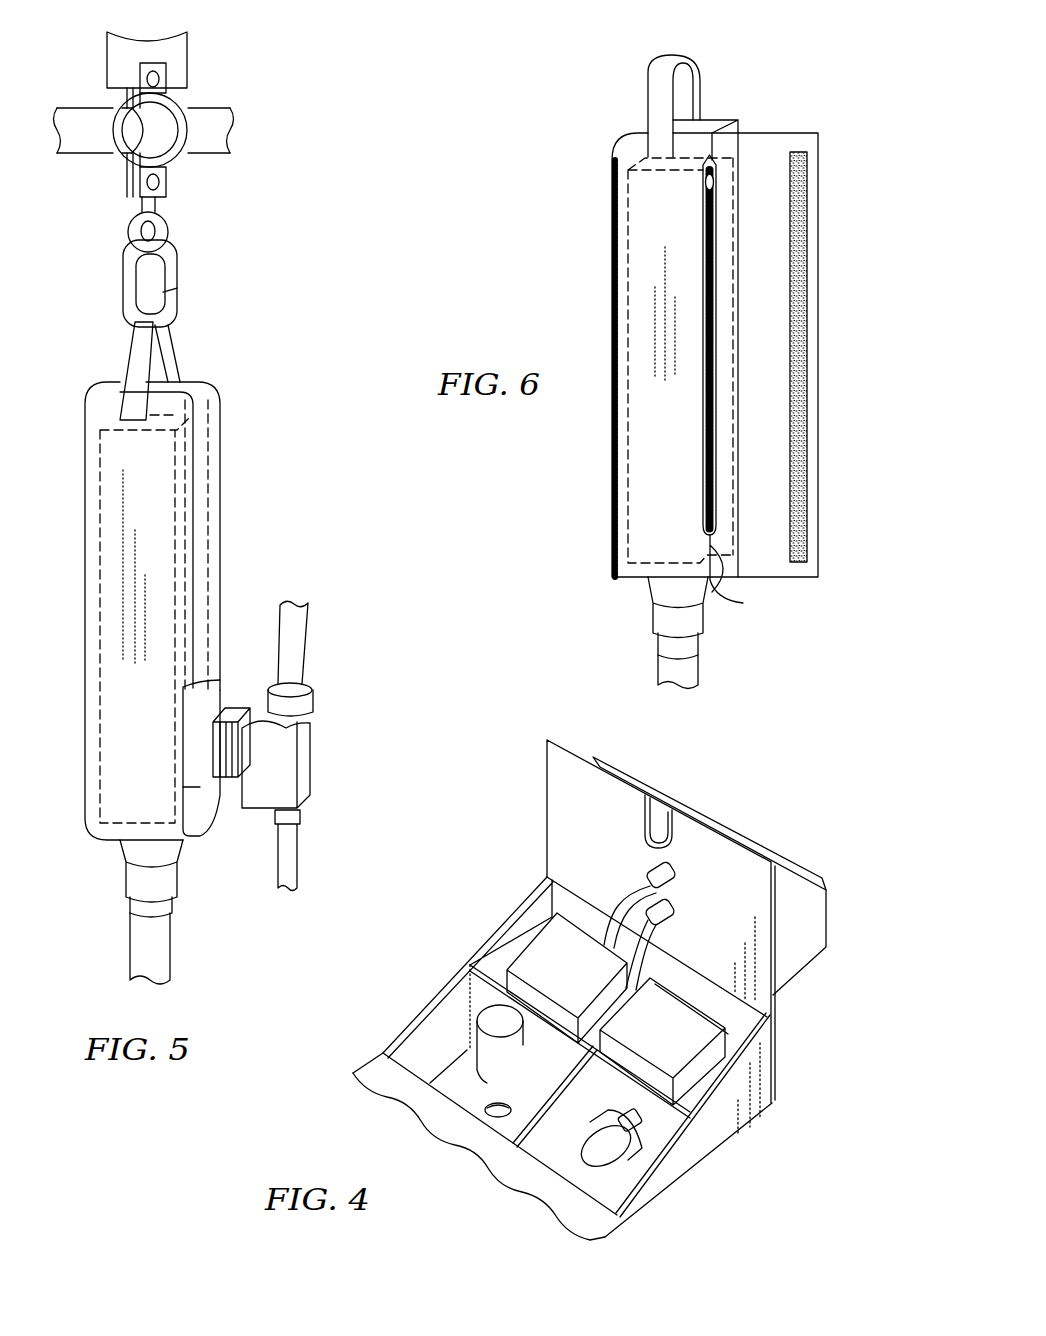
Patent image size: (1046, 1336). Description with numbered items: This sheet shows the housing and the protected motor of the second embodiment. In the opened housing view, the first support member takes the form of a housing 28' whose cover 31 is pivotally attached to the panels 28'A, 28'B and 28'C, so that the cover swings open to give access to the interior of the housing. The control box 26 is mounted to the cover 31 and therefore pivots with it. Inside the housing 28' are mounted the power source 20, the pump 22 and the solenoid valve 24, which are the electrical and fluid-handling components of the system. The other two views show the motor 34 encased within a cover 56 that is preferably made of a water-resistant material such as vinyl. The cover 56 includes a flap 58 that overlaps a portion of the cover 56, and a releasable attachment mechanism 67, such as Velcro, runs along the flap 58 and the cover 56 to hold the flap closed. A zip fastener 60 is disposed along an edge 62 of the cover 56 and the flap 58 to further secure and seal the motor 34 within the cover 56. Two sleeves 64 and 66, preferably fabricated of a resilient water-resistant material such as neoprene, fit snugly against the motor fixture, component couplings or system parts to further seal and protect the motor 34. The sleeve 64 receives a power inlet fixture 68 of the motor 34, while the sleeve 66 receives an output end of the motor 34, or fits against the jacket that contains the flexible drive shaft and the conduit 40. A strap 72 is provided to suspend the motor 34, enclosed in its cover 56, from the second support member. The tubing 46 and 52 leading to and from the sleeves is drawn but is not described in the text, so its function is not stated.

In FIG. 4, the power source 20 is at (587, 976).
In FIG. 4, the pump 22 is at (492, 1012).
In FIG. 4, the solenoid valve 24 is at (610, 1130).
In FIG. 4, the control box 26 is at (792, 958).
In FIG. 4, the housing 28' is at (703, 959).
In FIG. 4, the panel 28'A is at (701, 1125).
In FIG. 4, the panel 28'B is at (468, 967).
In FIG. 4, the panel 28'C is at (521, 1043).
In FIG. 4, the cover 31 is at (735, 909).
In FIG. 5, the motor 34 is at (102, 507).
In FIG. 6, the motor 34 is at (627, 222).
In FIG. 5, the conduit 40 is at (300, 843).
In FIG. 5, the tube 46 is at (130, 938).
In FIG. 6, the tube 46 is at (658, 663).
In FIG. 5, the inlet tube 52 is at (308, 647).
In FIG. 5, the cover 56 is at (87, 447).
In FIG. 6, the cover 56 is at (610, 138).
In FIG. 6, the flap 58 is at (773, 133).
In FIG. 6, the zip fastener 60 is at (712, 278).
In FIG. 6, the edge 62 is at (745, 577).
In FIG. 5, the sleeve 64 is at (210, 695).
In FIG. 5, the sleeve 66 is at (130, 847).
In FIG. 6, the sleeve 66 is at (658, 587).
In FIG. 6, the releasable attachment mechanism 67 is at (613, 258).
In FIG. 5, the power inlet fixture 68 is at (312, 762).
In FIG. 5, the strap 72 is at (128, 350).
In FIG. 6, the strap 72 is at (650, 90).